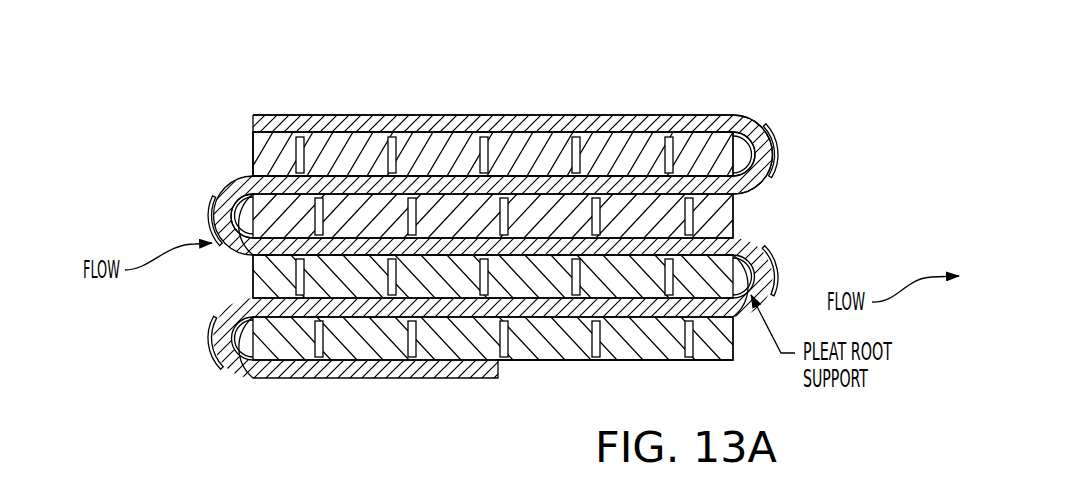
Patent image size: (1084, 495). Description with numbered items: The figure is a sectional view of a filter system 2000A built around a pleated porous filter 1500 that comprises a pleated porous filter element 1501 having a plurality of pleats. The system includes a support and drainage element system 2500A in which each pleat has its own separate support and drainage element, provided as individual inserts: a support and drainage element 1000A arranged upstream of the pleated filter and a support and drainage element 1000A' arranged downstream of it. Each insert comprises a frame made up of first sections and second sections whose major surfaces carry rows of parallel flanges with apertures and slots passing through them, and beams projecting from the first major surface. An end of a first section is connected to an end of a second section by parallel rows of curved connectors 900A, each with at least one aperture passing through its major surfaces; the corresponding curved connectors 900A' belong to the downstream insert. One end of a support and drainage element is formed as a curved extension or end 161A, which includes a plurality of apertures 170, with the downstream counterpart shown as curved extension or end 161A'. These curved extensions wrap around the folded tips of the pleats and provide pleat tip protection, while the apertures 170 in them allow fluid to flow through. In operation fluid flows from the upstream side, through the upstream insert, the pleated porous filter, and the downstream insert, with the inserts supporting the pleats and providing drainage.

The pleated porous filter 1500 is at (355, 115).
The pleated porous filter element 1501 is at (493, 62).
The support and drainage element 1000A is at (398, 173).
The support and drainage element 1000A' is at (579, 274).
The filter system 2000A is at (192, 423).
The support and drainage element system 2500A is at (607, 155).
The curved connector 900A is at (823, 166).
The curved connector 900A' is at (191, 282).
The curved extension or end 161A' is at (808, 154).
The curved extension or end 161A is at (155, 215).
The apertures 170 is at (208, 181).